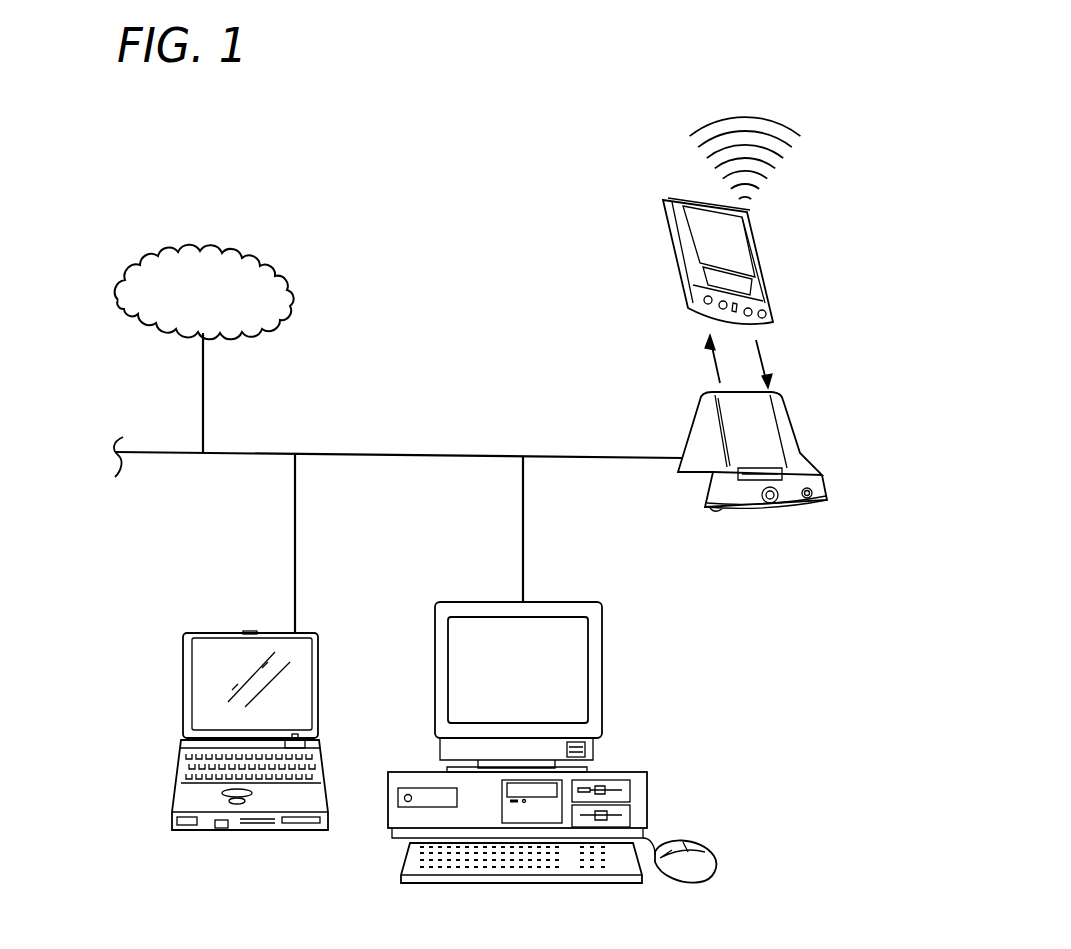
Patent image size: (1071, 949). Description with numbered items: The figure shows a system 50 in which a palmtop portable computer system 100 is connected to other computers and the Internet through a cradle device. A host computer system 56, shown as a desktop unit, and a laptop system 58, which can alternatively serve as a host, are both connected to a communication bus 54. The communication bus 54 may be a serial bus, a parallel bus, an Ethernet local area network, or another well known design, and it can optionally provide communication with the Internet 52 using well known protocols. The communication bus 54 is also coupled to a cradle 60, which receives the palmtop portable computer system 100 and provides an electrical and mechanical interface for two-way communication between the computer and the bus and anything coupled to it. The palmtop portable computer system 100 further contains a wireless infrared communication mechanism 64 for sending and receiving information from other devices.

The system 50 is at (274, 123).
The Internet 52 is at (118, 293).
The communication bus 54 is at (348, 452).
The host computer system 56 is at (603, 662).
The laptop system 58 is at (183, 670).
The cradle 60 is at (773, 518).
The wireless infrared communication mechanism 64 is at (712, 158).
The palmtop portable computer system 100 is at (675, 253).